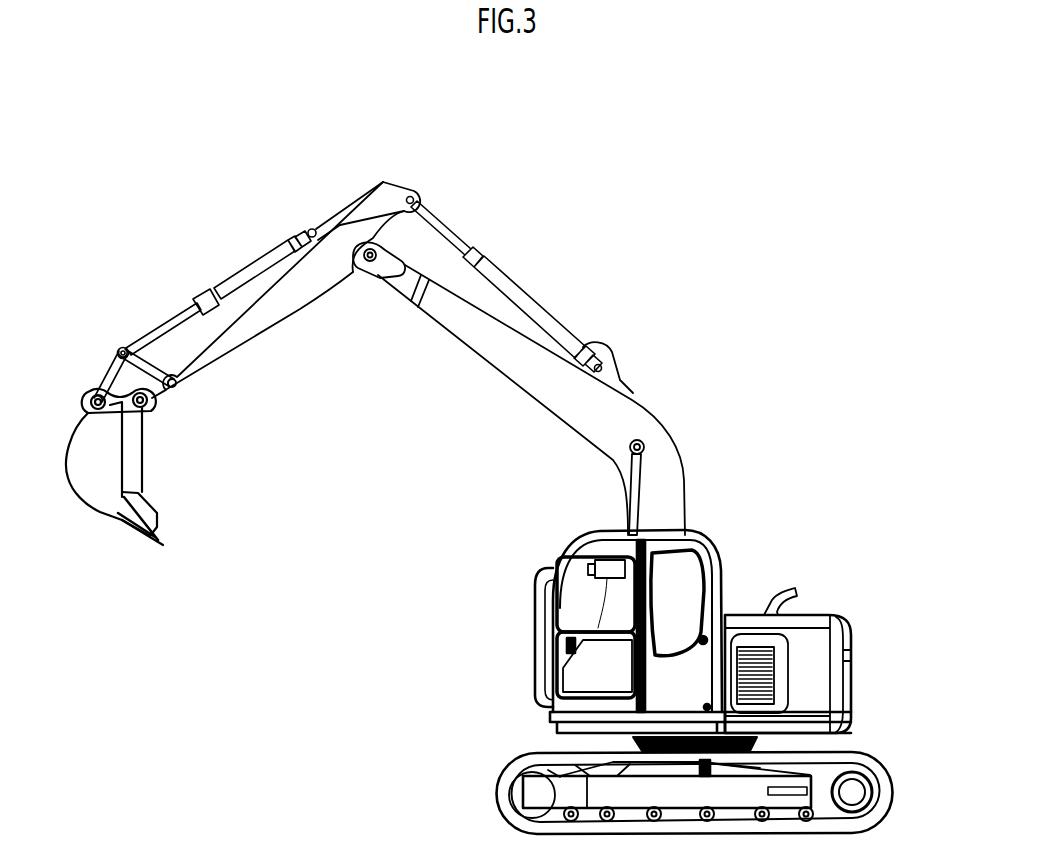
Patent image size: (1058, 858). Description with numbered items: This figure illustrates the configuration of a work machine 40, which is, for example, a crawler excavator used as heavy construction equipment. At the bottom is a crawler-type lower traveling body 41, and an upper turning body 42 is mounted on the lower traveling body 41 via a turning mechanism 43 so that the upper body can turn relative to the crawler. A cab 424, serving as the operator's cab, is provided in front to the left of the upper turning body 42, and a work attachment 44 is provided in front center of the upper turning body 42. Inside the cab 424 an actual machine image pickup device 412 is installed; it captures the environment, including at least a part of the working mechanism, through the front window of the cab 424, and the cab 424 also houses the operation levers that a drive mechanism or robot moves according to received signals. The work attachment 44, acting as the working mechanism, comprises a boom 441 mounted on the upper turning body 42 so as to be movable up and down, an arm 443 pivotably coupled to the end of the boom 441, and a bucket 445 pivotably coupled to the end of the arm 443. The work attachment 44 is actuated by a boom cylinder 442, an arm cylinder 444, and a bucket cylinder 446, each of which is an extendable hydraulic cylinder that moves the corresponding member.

The work machine 40 is at (717, 166).
The lower traveling body 41 is at (518, 755).
The upper turning body 42 is at (859, 647).
The turning mechanism 43 is at (760, 742).
The work attachment 44 is at (515, 227).
The actual machine image pickup device 412 is at (607, 561).
The cab 424 is at (720, 534).
The boom 441 is at (670, 468).
The boom cylinder 442 is at (628, 513).
The arm 443 is at (266, 322).
The arm cylinder 444 is at (533, 297).
The bucket 445 is at (98, 496).
The bucket cylinder 446 is at (257, 256).